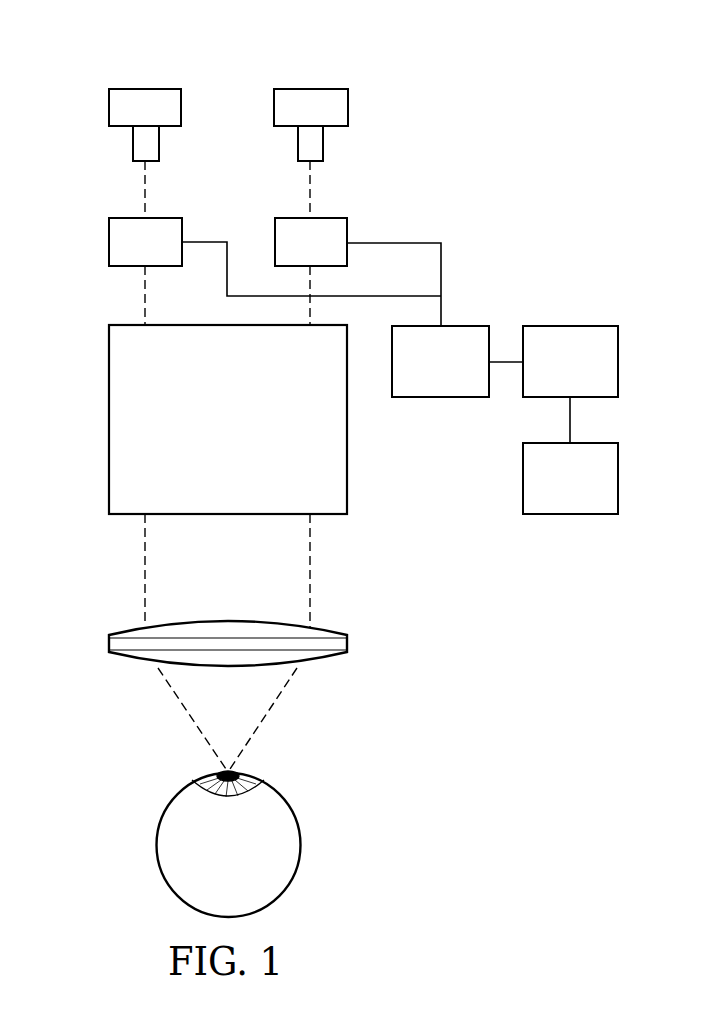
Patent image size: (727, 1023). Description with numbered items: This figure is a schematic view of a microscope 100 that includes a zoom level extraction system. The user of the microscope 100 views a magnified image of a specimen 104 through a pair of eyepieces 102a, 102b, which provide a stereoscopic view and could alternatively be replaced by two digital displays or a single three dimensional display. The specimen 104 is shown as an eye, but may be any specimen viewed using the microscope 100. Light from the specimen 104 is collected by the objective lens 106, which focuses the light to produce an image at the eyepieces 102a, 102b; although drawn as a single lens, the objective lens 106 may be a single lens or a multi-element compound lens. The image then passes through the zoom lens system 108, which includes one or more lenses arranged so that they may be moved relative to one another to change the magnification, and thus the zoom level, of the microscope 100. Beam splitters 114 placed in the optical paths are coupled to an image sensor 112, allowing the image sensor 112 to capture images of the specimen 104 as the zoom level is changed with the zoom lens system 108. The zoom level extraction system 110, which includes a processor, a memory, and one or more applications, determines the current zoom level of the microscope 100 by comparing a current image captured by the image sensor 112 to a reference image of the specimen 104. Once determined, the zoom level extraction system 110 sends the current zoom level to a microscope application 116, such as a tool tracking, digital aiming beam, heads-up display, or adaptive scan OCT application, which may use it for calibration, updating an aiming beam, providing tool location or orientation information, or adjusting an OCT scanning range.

The microscope 100 is at (565, 60).
The eyepiece 102a is at (132, 89).
The eyepiece 102b is at (321, 89).
The specimen 104 is at (157, 845).
The objective lens 106 is at (109, 643).
The zoom lens system 108 is at (251, 435).
The zoom level extraction system 110 is at (594, 376).
The image sensor 112 is at (464, 376).
The beam splitter 114 is at (109, 230).
The microscope application 116 is at (594, 494).